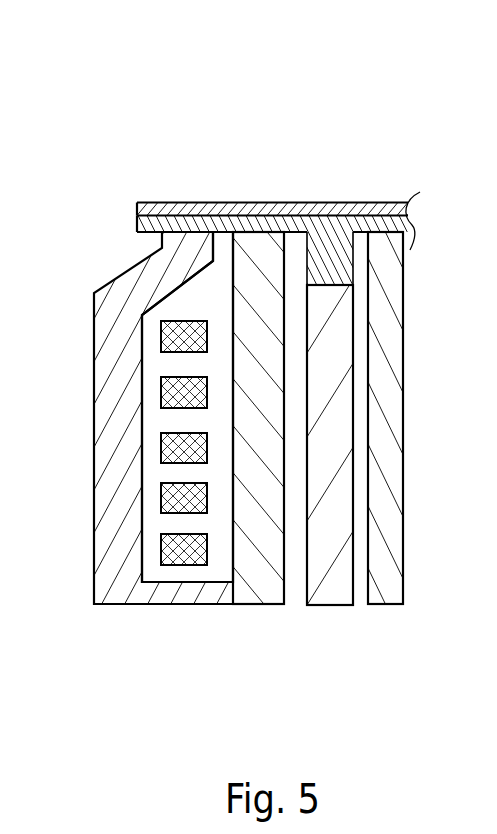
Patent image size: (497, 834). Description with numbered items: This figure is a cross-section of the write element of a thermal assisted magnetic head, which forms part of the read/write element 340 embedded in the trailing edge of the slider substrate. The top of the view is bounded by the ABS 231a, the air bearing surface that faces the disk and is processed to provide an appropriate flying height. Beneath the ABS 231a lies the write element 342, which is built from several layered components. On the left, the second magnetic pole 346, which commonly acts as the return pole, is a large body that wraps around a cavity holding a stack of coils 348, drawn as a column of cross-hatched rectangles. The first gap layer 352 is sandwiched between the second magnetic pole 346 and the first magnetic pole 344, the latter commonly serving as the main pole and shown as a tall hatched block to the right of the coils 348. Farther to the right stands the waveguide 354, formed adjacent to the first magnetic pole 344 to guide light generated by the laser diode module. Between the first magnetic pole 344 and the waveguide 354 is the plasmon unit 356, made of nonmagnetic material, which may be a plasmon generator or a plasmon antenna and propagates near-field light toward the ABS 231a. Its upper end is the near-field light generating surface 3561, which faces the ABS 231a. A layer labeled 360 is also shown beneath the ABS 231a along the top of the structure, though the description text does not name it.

The read/write element 340 is at (88, 40).
The ABS 231a is at (144, 198).
The write element 342 is at (303, 122).
The first magnetic pole 344 is at (275, 243).
The second magnetic pole 346 is at (172, 248).
The coils 348 is at (176, 333).
The first gap layer 352 is at (222, 248).
The waveguide 354 is at (388, 589).
The plasmon unit 356 is at (327, 363).
The near-field light generating surface 3561 is at (315, 285).
The back plate 360 is at (343, 232).